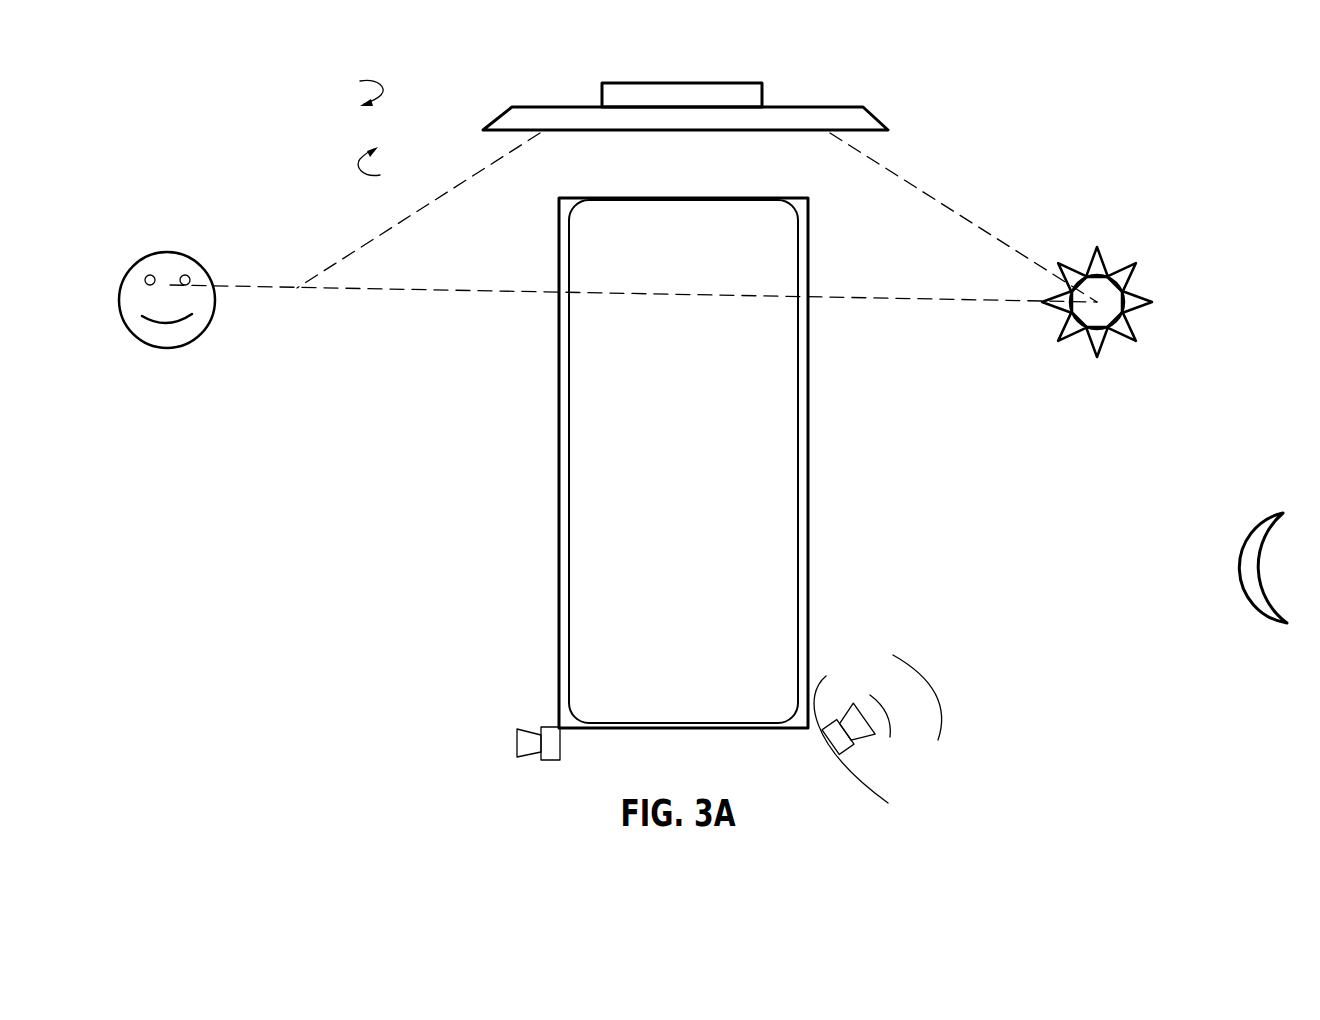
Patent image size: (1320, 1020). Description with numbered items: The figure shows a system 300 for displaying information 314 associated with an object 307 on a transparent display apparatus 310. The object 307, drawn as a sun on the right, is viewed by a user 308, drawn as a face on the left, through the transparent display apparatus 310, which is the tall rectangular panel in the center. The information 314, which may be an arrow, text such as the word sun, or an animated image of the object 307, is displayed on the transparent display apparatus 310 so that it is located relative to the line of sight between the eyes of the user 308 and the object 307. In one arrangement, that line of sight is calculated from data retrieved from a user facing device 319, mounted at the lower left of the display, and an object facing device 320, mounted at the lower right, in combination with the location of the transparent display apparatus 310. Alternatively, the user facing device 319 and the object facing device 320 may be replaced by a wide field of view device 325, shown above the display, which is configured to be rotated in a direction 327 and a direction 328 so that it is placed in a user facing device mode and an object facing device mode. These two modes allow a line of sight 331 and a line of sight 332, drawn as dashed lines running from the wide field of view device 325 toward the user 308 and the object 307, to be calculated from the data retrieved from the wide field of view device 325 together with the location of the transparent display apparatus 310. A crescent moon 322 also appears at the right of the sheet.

The system 300 is at (201, 169).
The object 307 is at (1108, 275).
The user 308 is at (205, 268).
The transparent display apparatus 310 is at (709, 520).
The information 314 is at (681, 294).
The user facing device 319 is at (550, 762).
The object facing device 320 is at (850, 775).
The moon / dark ambient condition 322 is at (1240, 535).
The wide field of view device 325 is at (681, 83).
The direction 327 is at (382, 94).
The direction 328 is at (360, 158).
The line of sight 331 is at (368, 245).
The line of sight 332 is at (478, 290).